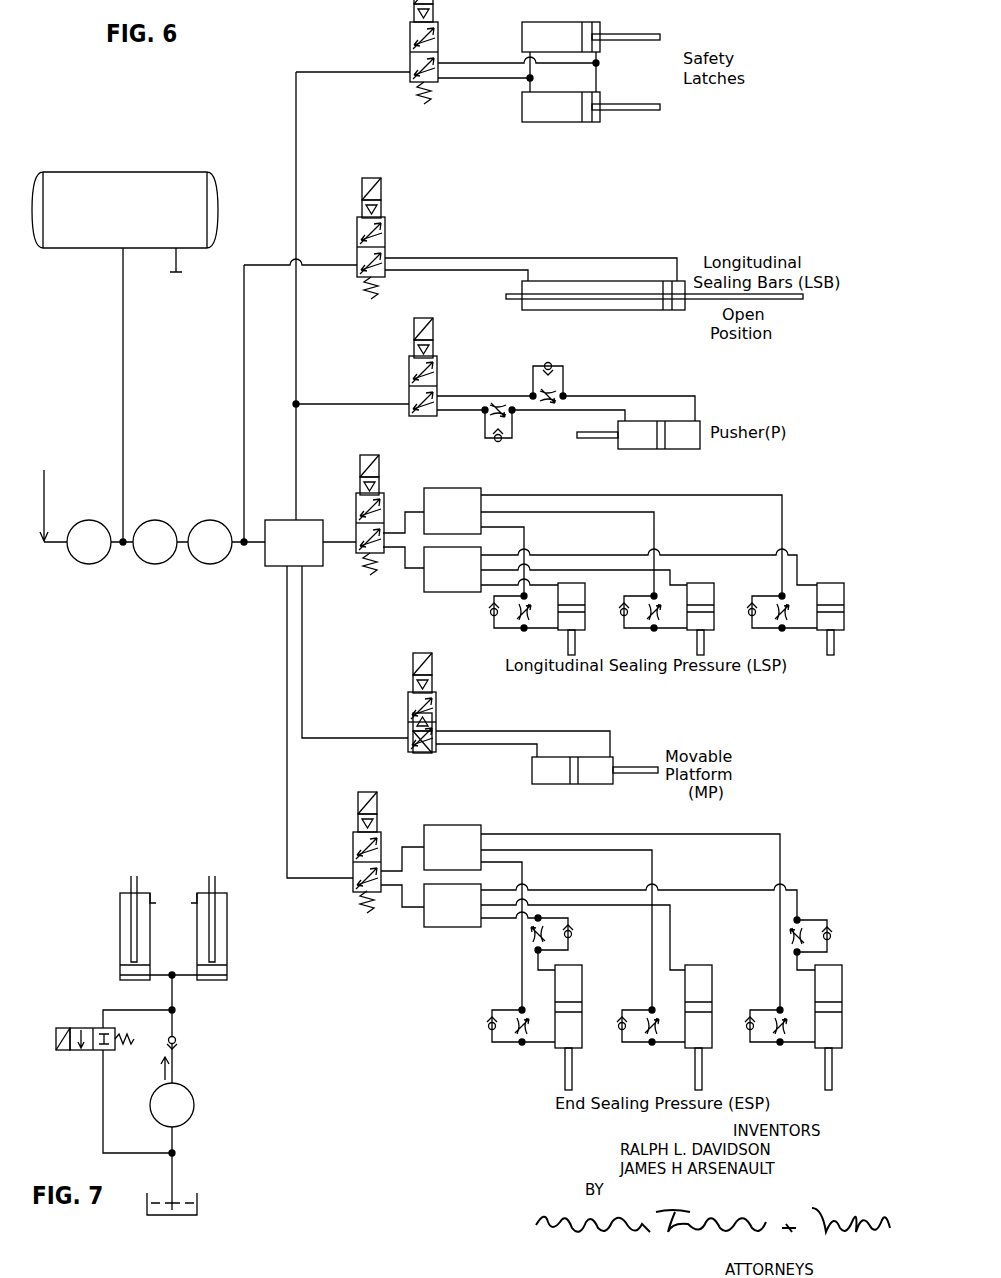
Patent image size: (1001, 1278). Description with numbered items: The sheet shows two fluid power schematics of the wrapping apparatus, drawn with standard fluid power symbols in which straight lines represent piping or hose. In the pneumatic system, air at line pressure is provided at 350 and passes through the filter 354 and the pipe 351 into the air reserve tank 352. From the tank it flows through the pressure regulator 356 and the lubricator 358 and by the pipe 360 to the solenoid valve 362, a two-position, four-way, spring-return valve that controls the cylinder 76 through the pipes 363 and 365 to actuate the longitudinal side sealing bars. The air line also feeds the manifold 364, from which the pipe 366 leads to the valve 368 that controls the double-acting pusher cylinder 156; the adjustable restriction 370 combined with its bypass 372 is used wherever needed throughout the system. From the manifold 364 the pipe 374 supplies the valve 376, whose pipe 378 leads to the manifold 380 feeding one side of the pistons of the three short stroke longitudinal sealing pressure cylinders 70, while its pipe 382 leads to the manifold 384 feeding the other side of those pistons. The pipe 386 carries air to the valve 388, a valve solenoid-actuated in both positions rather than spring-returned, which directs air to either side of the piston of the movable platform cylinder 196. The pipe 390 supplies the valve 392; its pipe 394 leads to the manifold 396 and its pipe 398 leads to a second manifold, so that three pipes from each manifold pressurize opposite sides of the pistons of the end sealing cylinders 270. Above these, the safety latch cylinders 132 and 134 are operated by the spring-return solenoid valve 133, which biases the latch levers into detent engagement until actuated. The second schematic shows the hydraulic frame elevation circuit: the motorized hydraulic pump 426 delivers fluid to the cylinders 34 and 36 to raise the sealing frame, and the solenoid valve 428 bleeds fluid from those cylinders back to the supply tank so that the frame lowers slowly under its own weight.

In FIG. 6, the cylinder 132 is at (566, 22).
In FIG. 6, the solenoid valve 133 is at (410, 44).
In FIG. 6, the cylinder 134 is at (566, 122).
In FIG. 6, the air reserve tank 352 is at (78, 250).
In FIG. 6, the pipe 351 is at (123, 398).
In FIG. 6, the line pressure air supply 350 is at (50, 545).
In FIG. 6, the filter 354 is at (84, 566).
In FIG. 6, the pressure regulator 356 is at (151, 566).
In FIG. 6, the lubricator 358 is at (209, 566).
In FIG. 6, the pipe 360 is at (244, 366).
In FIG. 6, the solenoid valve 362 is at (385, 233).
In FIG. 6, the pipe 363 is at (490, 271).
In FIG. 6, the pipe 365 is at (516, 258).
In FIG. 6, the cylinder 76 is at (617, 311).
In FIG. 6, the pipe 366 is at (297, 450).
In FIG. 6, the valve 368 is at (409, 372).
In FIG. 6, the adjustable restriction 370 is at (560, 392).
In FIG. 6, the bypass 372 is at (550, 364).
In FIG. 6, the cylinder 156 is at (682, 450).
In FIG. 6, the manifold 364 is at (276, 567).
In FIG. 6, the pipe 374 is at (343, 547).
In FIG. 6, the valve 376 is at (356, 500).
In FIG. 6, the pipe 378 is at (405, 510).
In FIG. 6, the manifold 380 is at (450, 488).
In FIG. 6, the pipe 382 is at (407, 569).
In FIG. 6, the manifold 384 is at (453, 593).
In FIG. 6, the short stroke cylinder 70 is at (585, 583).
In FIG. 6, the pipe 386 is at (305, 705).
In FIG. 6, the valve 388 is at (436, 708).
In FIG. 6, the cylinder 196 is at (557, 785).
In FIG. 6, the pipe 390 is at (287, 714).
In FIG. 6, the valve 392 is at (353, 856).
In FIG. 6, the pipe 394 is at (402, 846).
In FIG. 6, the manifold 396 is at (452, 825).
In FIG. 6, the pipe 398 is at (405, 908).
In FIG. 6, the fluid-operated cylinder 270 is at (574, 965).
In FIG. 7, the cylinder 34 is at (120, 935).
In FIG. 7, the cylinder 36 is at (227, 938).
In FIG. 7, the solenoid valve 428 is at (86, 1051).
In FIG. 7, the motorized hydraulic pump 426 is at (195, 1100).